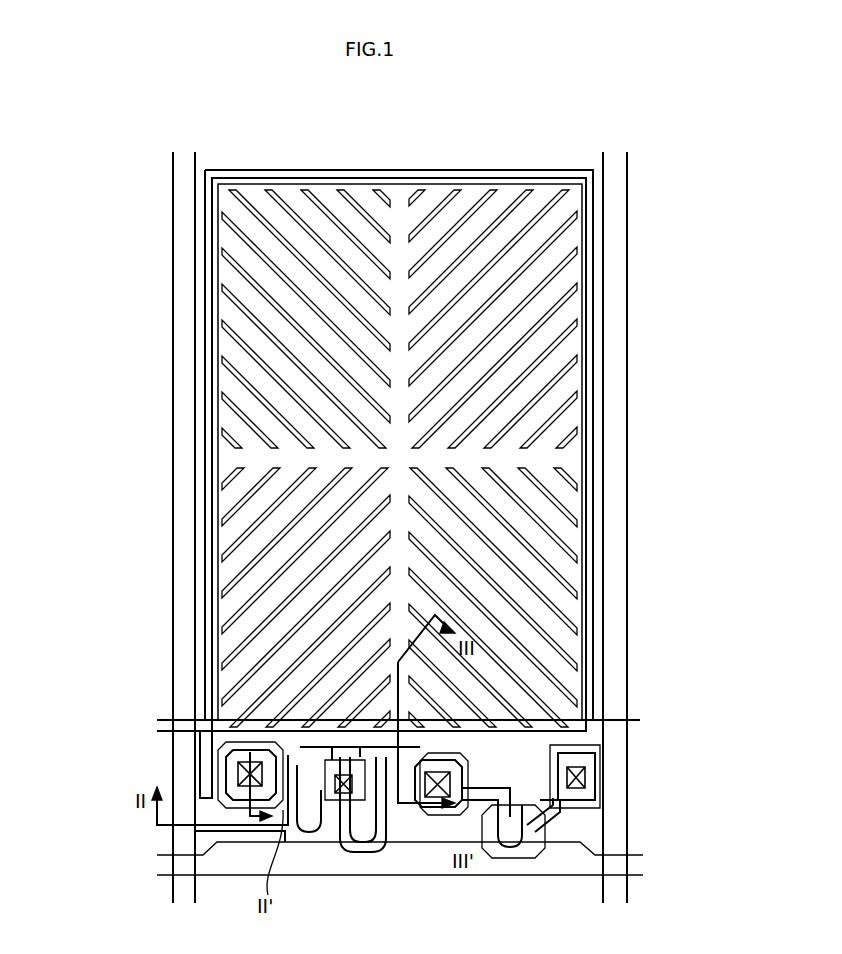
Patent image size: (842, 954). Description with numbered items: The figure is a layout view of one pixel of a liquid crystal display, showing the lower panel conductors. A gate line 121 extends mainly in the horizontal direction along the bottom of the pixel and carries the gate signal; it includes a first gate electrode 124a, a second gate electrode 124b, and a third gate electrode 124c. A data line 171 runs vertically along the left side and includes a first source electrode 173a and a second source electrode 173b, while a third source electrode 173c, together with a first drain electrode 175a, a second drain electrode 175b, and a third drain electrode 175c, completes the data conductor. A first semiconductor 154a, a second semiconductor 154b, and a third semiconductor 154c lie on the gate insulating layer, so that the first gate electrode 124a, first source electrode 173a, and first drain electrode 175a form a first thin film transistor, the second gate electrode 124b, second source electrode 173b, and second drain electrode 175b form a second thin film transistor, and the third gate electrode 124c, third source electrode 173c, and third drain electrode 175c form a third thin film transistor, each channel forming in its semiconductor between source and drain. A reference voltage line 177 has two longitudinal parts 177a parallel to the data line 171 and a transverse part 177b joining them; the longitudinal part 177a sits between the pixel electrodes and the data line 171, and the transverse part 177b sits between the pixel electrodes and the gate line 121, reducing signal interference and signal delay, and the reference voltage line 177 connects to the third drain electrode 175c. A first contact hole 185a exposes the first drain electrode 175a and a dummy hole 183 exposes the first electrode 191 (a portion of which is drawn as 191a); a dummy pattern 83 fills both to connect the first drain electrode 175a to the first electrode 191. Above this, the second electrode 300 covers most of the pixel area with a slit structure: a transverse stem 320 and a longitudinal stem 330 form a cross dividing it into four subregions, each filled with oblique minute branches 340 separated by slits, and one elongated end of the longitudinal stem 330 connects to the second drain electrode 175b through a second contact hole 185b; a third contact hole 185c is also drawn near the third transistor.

The second electrode 300 is at (100, 166).
The transverse stem 320 is at (660, 460).
The longitudinal stem 330 is at (665, 284).
The minute branches 340 is at (662, 667).
The data line 171 is at (190, 400).
The reference voltage line 177 is at (598, 585).
The longitudinal part 177a is at (598, 240).
The transverse part 177b is at (640, 720).
The first electrode 191 is at (598, 380).
The pixel electrode portion 191a is at (215, 545).
The gate line 121 is at (163, 853).
The first gate electrode 124a is at (318, 770).
The second gate electrode 124b is at (335, 778).
The third gate electrode 124c is at (555, 823).
The dummy pattern 83 is at (338, 784).
The first semiconductor 154a is at (298, 812).
The second semiconductor 154b is at (407, 807).
The third semiconductor 154c is at (530, 840).
The first source electrode 173a is at (300, 790).
The second source electrode 173b is at (378, 850).
The third source electrode 173c is at (560, 808).
The first drain electrode 175a is at (240, 765).
The second drain electrode 175b is at (377, 820).
The third drain electrode 175c is at (545, 840).
The dummy hole 183 is at (357, 838).
The first contact hole 185a is at (238, 775).
The second contact hole 185b is at (455, 777).
The third contact hole 185c is at (588, 777).